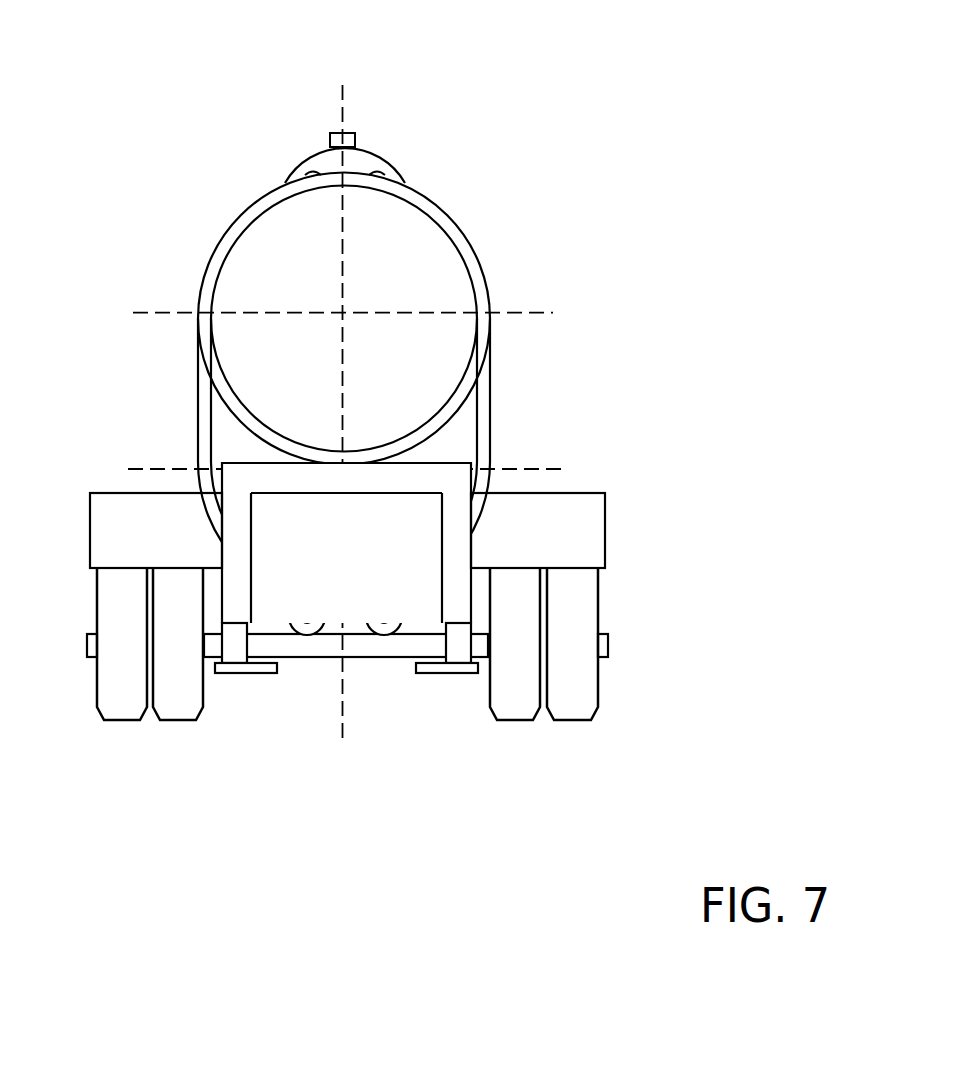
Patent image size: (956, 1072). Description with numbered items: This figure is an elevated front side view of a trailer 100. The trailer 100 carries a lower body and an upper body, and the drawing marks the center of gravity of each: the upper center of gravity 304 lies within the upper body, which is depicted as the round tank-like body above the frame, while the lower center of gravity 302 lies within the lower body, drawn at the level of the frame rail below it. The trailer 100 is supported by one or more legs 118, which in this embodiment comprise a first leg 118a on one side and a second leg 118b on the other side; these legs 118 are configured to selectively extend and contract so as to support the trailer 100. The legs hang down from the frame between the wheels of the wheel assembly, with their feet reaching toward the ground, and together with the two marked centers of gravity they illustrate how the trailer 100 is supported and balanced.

The trailer 100 is at (416, 431).
The upper center of gravity 304 is at (511, 310).
The lower center of gravity 302 is at (511, 468).
The one or more legs 118 is at (357, 729).
The first leg 118a is at (247, 674).
The second leg 118b is at (447, 674).